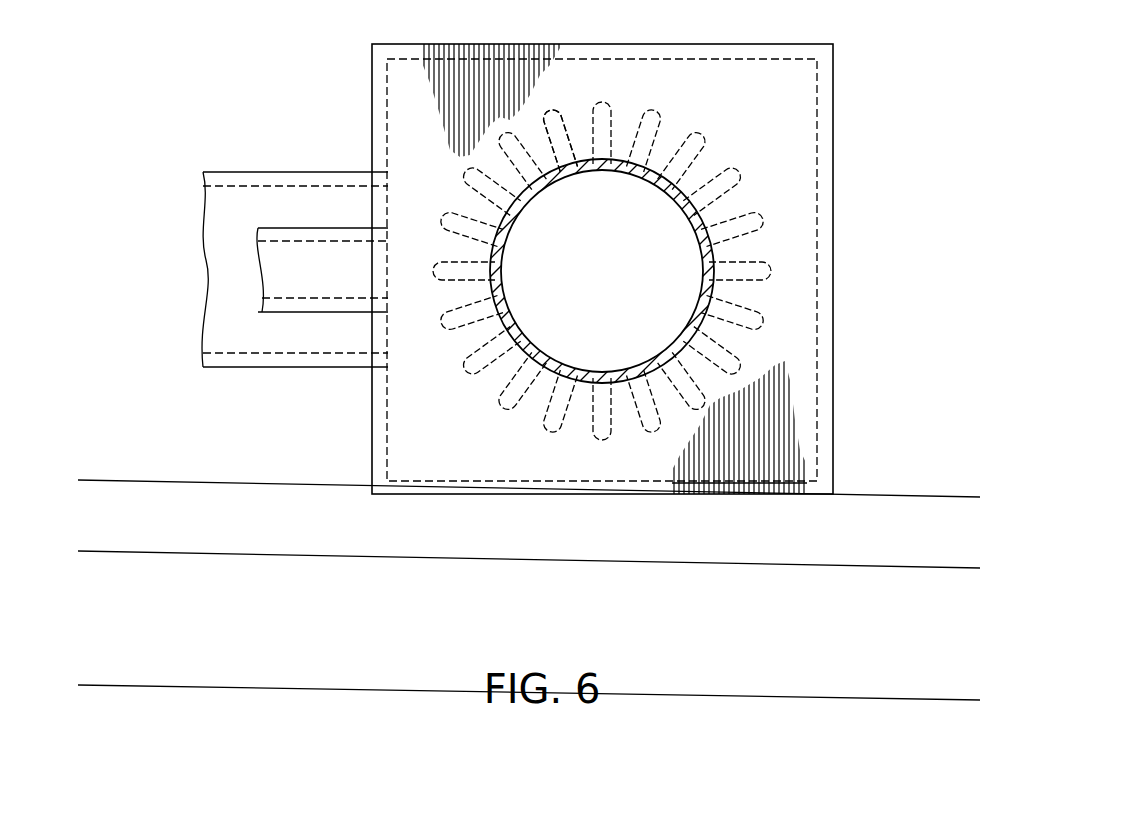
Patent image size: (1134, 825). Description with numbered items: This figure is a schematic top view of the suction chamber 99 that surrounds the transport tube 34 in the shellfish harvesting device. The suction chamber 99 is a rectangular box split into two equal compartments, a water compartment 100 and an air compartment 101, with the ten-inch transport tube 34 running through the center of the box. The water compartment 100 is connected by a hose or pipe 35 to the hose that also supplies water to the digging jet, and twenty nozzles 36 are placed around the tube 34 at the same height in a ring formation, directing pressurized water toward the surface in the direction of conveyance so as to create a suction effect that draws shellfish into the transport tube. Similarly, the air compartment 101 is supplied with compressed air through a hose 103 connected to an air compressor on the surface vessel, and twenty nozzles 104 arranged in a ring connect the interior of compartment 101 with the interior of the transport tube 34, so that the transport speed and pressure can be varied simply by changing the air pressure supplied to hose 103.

The transport tube 34 is at (717, 257).
The hose or pipe 35 is at (280, 198).
The nozzles 36 is at (590, 420).
The suction chamber 99 is at (613, 616).
The compartment 100 is at (448, 465).
The compartment 101 is at (602, 270).
The hose 103 is at (310, 283).
The nozzles 104 is at (645, 140).